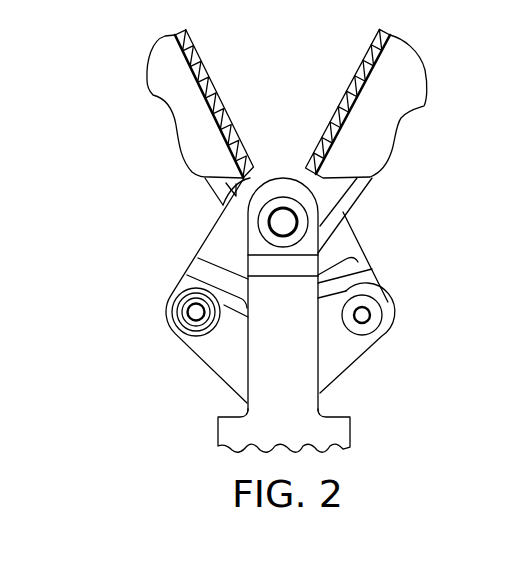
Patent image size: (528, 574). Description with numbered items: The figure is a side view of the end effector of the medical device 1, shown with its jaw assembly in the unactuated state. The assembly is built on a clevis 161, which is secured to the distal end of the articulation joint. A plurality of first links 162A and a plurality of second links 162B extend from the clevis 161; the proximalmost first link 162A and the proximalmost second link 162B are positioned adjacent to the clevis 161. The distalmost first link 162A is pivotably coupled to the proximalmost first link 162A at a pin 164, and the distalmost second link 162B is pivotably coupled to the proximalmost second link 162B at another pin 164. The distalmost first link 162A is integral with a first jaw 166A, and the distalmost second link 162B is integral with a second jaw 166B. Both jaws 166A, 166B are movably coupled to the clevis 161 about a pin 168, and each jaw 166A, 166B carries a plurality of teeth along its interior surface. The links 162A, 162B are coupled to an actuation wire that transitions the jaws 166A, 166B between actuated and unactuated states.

The surgical instrument 1 is at (471, 70).
The clevis 161 is at (227, 433).
The first links 162A is at (228, 249).
The second links 162B is at (338, 253).
The pin 164 is at (196, 312).
The first jaw 166A is at (412, 104).
The second jaw 166B is at (162, 92).
The pin 168 is at (284, 209).